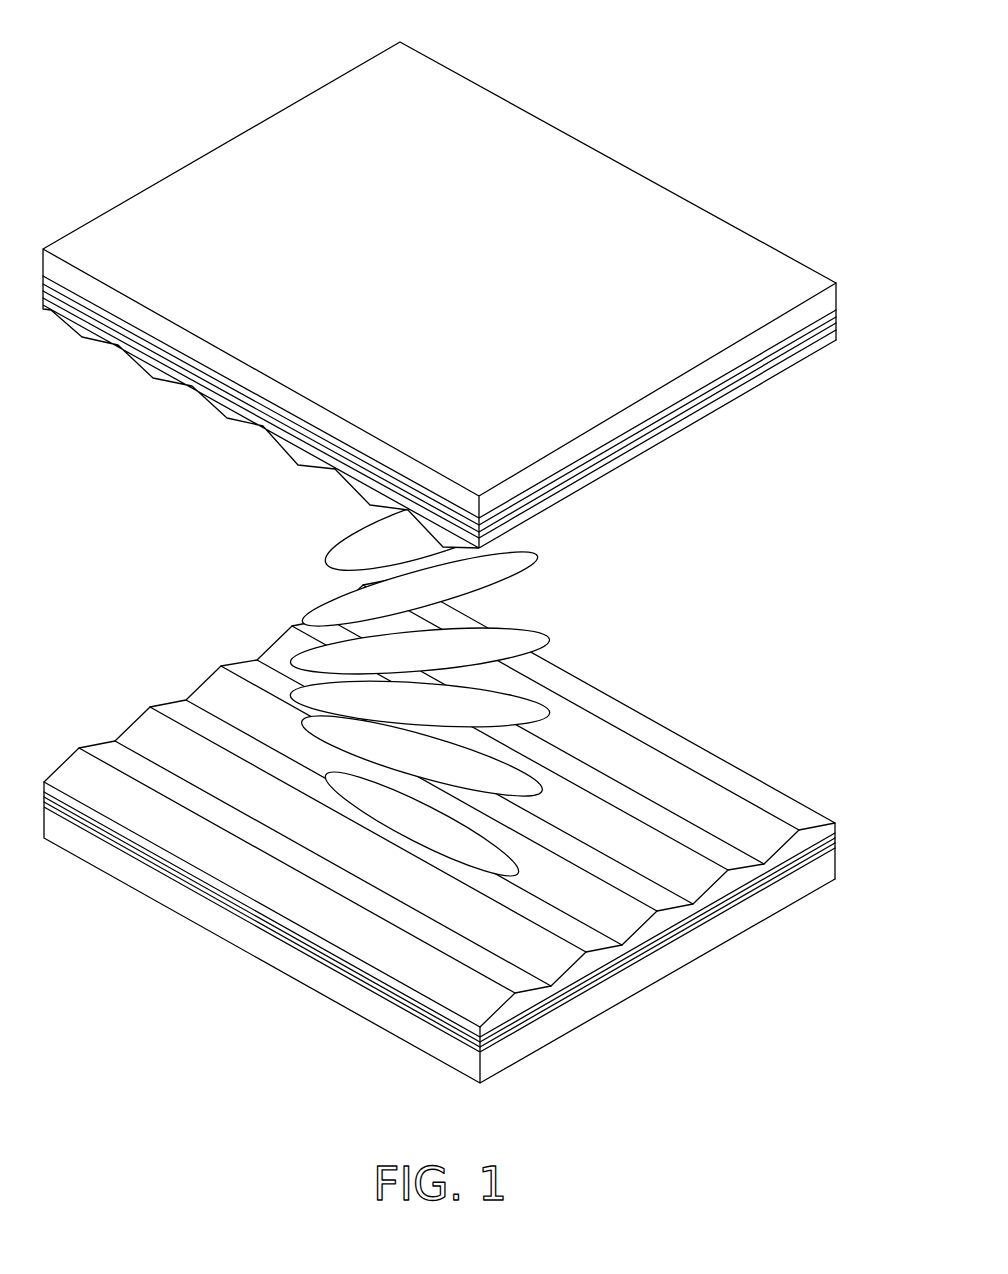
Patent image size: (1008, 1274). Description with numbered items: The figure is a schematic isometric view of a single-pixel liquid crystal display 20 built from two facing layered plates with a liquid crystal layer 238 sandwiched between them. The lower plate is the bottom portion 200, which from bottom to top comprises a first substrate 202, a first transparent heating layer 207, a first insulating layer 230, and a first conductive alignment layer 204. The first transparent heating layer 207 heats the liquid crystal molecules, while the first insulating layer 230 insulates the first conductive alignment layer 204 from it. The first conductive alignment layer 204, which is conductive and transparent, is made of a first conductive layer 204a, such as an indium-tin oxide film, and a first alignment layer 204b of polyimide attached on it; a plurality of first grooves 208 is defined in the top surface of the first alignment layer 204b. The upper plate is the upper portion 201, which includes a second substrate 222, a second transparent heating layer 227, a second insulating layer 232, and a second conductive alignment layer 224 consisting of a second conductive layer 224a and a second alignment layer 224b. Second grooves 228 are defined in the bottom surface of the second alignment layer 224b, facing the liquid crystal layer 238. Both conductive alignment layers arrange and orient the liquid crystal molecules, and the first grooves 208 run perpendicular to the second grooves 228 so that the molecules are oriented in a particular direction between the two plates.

The single-pixel liquid crystal display 20 is at (598, 39).
The bottom portion 200 is at (466, 830).
The upper portion 201 is at (458, 295).
The first substrate 202 is at (565, 1020).
The first conductive alignment layer 204 is at (466, 917).
The first conductive layer 204a is at (688, 925).
The first alignment layer 204b is at (723, 888).
The first transparent heating layer 207 is at (835, 854).
The first grooves 208 is at (223, 688).
The second substrate 222 is at (776, 333).
The second conductive alignment layer 224 is at (440, 414).
The second conductive layer 224a is at (658, 437).
The second alignment layer 224b is at (625, 463).
The second transparent heating layer 227 is at (836, 316).
The second grooves 228 is at (192, 384).
The first insulating layer 230 is at (618, 967).
The second insulating layer 232 is at (744, 367).
The liquid crystal layer 238 is at (528, 643).